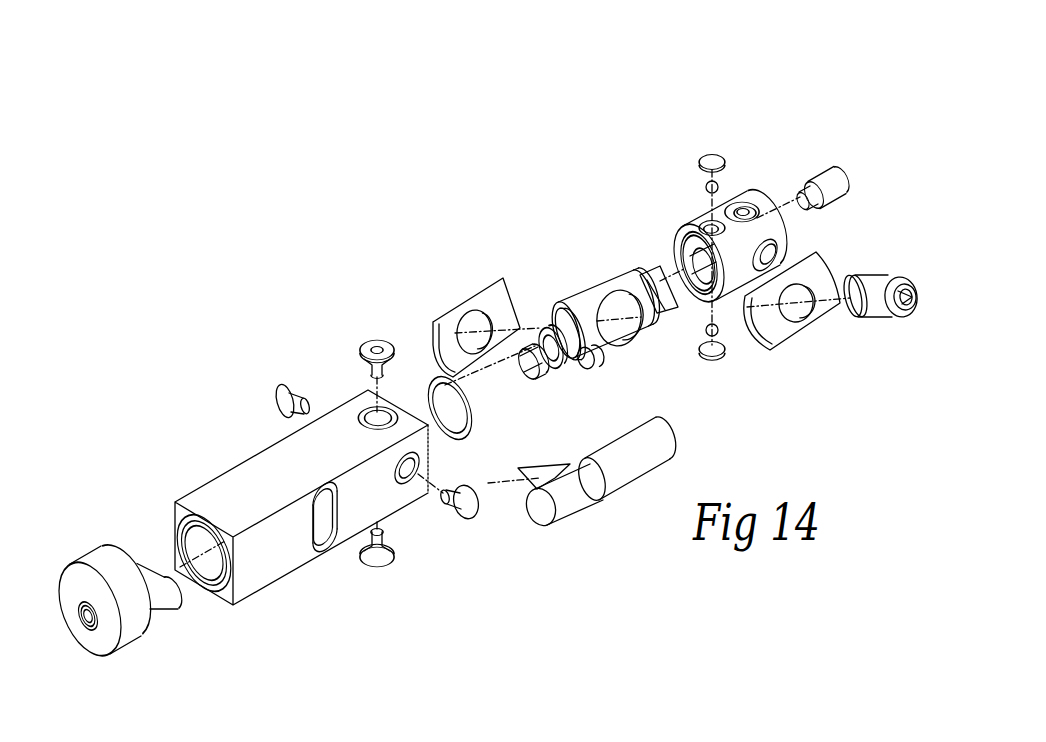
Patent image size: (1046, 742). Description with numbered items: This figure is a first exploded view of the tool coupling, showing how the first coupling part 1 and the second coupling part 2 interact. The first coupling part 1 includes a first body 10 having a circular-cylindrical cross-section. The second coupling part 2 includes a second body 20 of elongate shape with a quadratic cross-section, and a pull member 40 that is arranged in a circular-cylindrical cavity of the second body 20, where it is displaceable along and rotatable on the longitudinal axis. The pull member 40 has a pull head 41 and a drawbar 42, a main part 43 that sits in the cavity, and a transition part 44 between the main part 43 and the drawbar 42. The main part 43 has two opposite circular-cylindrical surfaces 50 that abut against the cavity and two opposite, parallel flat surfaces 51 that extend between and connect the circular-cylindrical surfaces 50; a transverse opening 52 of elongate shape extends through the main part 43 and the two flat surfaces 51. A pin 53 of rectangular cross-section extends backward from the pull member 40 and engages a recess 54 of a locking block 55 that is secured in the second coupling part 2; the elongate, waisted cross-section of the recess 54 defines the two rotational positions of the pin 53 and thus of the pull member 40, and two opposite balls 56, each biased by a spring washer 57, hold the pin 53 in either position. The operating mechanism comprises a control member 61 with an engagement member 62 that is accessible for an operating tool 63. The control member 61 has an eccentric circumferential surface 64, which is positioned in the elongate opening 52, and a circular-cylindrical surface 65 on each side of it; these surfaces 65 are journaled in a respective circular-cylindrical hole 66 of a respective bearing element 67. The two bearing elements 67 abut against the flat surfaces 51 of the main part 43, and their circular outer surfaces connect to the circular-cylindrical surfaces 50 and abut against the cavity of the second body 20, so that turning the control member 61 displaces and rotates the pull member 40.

The first coupling part 1 is at (92, 540).
The second coupling part 2 is at (232, 434).
The first body 10 is at (132, 633).
The second body 20 is at (280, 565).
The pull member 40 is at (621, 185).
The pull head 41 is at (520, 372).
The drawbar 42 is at (553, 352).
The main part 43 is at (590, 362).
The transition part 44 is at (570, 330).
The circular-cylindrical surfaces 50 is at (608, 305).
The flat surfaces 51 is at (636, 283).
The transverse opening 52 is at (626, 335).
The pin 53 is at (648, 268).
The recess 54 is at (700, 272).
The locking block 55 is at (738, 260).
The balls 56 is at (718, 187).
The spring washer 57 is at (713, 157).
The control member 61 is at (894, 255).
The engagement member 62 is at (913, 298).
The operating tool 63 is at (612, 480).
The eccentric circumferential surface 64 is at (867, 303).
The circular-cylindrical surfaces 65 is at (850, 285).
The circular-cylindrical hole 66 is at (476, 330).
The bearing elements 67 is at (647, 282).